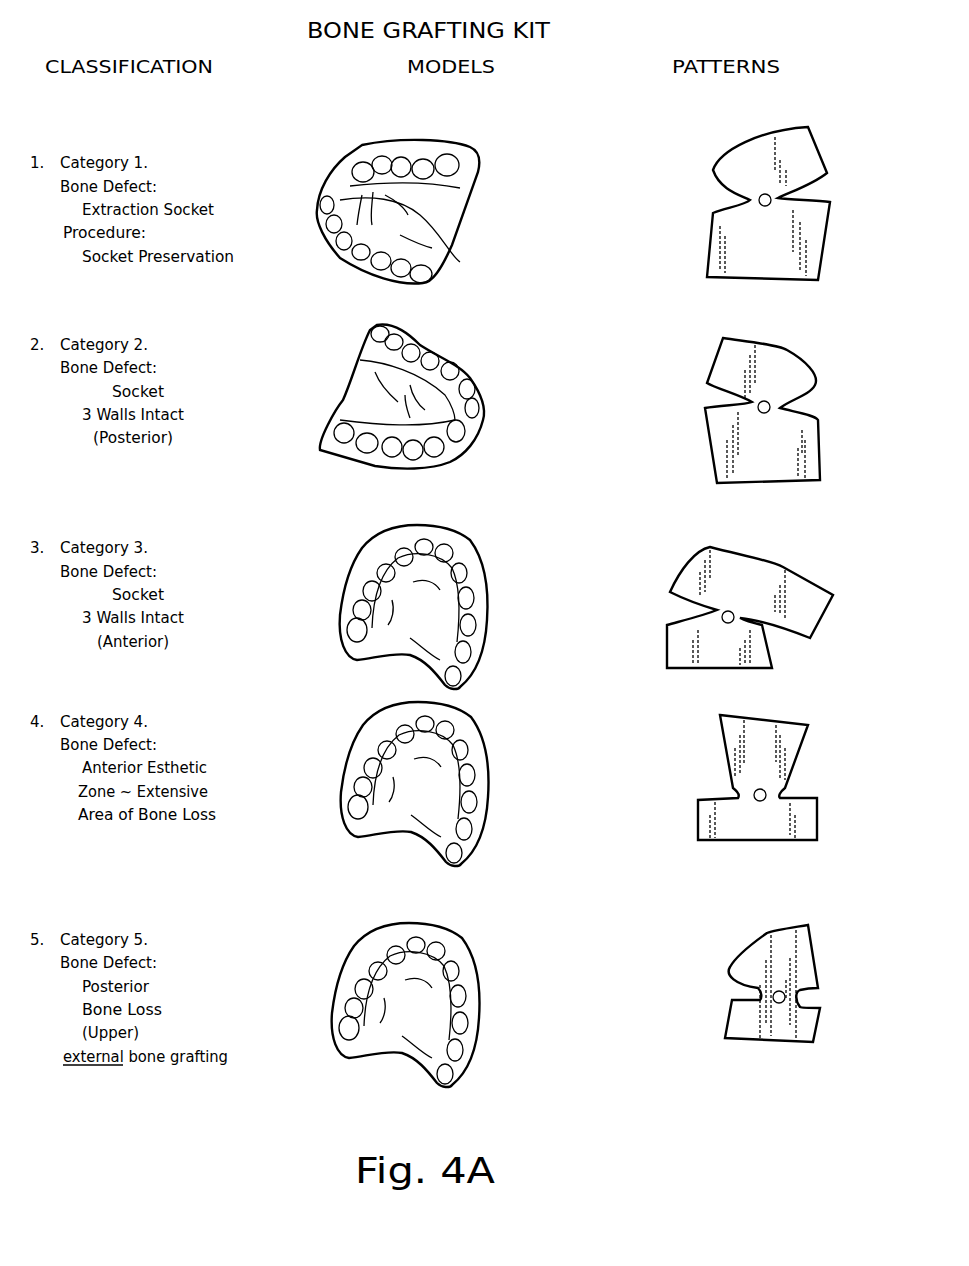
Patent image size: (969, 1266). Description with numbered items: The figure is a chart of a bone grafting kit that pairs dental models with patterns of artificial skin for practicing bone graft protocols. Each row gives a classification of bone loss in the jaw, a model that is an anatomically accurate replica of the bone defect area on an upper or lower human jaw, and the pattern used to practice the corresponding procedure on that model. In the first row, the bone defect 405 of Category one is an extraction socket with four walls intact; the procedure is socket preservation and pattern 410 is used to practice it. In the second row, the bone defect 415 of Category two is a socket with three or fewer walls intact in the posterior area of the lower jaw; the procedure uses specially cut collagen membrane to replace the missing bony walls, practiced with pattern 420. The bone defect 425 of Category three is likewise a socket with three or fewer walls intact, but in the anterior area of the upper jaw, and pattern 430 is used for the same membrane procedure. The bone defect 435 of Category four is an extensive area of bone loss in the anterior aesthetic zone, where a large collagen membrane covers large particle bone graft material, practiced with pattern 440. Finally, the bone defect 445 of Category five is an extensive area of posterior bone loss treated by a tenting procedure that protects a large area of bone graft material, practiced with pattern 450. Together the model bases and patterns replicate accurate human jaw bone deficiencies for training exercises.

The bone defect 405 is at (410, 253).
The pattern 410 is at (790, 172).
The bone defect 415 is at (403, 470).
The pattern 420 is at (782, 378).
The bone defect 425 is at (488, 587).
The pattern 430 is at (807, 600).
The bone defect 435 is at (483, 737).
The pattern 440 is at (790, 757).
The bone defect 445 is at (353, 1043).
The pattern 450 is at (800, 967).